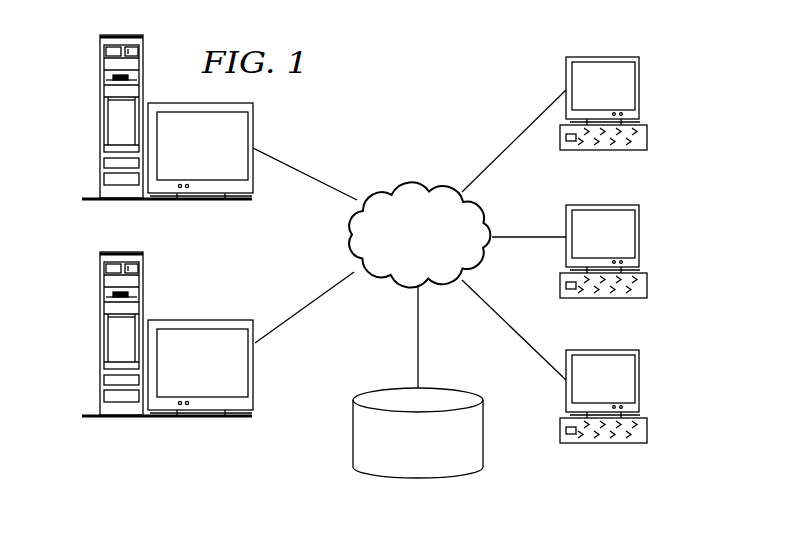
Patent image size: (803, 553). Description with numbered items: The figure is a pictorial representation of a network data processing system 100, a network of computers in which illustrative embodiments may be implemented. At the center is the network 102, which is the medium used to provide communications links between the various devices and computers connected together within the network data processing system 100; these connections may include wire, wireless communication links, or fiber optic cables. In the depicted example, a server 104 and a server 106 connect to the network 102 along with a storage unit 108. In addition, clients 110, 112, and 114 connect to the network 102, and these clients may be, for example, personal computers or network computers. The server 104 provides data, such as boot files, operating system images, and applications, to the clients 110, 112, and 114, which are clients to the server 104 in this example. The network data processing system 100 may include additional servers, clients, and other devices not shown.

The network data processing system 100 is at (476, 60).
The network 102 is at (390, 182).
The server 104 is at (100, 120).
The server 106 is at (100, 337).
The storage unit 108 is at (398, 477).
The client 110 is at (639, 87).
The client 112 is at (639, 235).
The client 114 is at (640, 380).